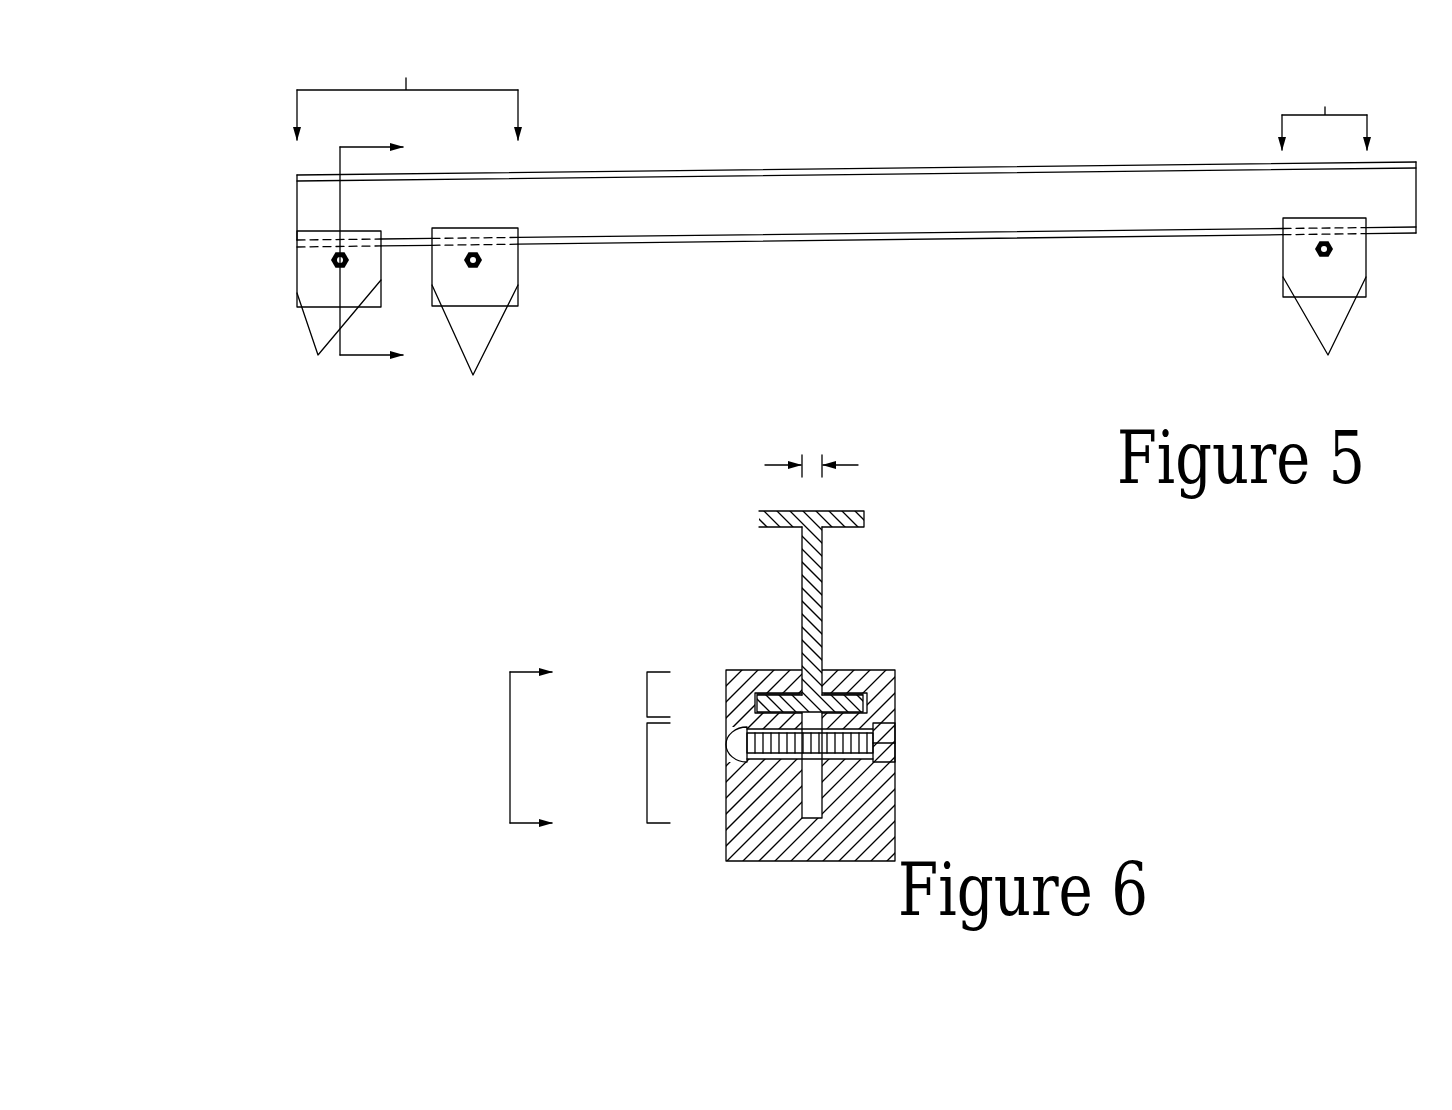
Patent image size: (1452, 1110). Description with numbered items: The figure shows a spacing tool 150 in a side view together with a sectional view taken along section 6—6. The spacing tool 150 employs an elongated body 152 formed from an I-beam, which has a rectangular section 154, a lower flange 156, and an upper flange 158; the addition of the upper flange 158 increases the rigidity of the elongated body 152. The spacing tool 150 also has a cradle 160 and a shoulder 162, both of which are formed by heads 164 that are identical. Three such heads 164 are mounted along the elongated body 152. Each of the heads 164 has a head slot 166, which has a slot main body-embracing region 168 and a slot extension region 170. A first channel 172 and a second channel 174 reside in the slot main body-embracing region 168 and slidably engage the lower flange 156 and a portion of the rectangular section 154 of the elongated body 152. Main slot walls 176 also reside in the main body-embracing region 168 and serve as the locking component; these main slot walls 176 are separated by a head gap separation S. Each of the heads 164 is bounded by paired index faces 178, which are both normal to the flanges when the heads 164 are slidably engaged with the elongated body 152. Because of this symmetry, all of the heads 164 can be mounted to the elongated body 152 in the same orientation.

In FIG. 5, the spacing tool 150 is at (700, 110).
In FIG. 6, the spacing tool 150 is at (630, 553).
In FIG. 5, the elongated body 152 is at (1007, 167).
In FIG. 6, the elongated body 152 is at (885, 585).
In FIG. 5, the rectangular section 154 is at (1140, 192).
In FIG. 6, the rectangular section 154 is at (802, 575).
In FIG. 5, the lower flange 156 is at (953, 237).
In FIG. 6, the lower flange 156 is at (800, 695).
In FIG. 5, the upper flange 158 is at (787, 173).
In FIG. 5, the cradle 160 is at (407, 93).
In FIG. 5, the shoulder 162 is at (1324, 110).
In FIG. 5, the head 164 is at (308, 263).
In FIG. 6, the head 164 is at (958, 702).
In FIG. 6, the head slot 166 is at (510, 748).
In FIG. 6, the slot main body-embracing region 168 is at (647, 693).
In FIG. 6, the slot extension region 170 is at (647, 773).
In FIG. 6, the first channel 172 is at (865, 710).
In FIG. 6, the second channel 174 is at (775, 692).
In FIG. 6, the main slot walls 176 is at (797, 686).
In FIG. 5, the paired index faces 178 is at (816, 344).
In FIG. 5, the section 6- 6 is at (371, 251).